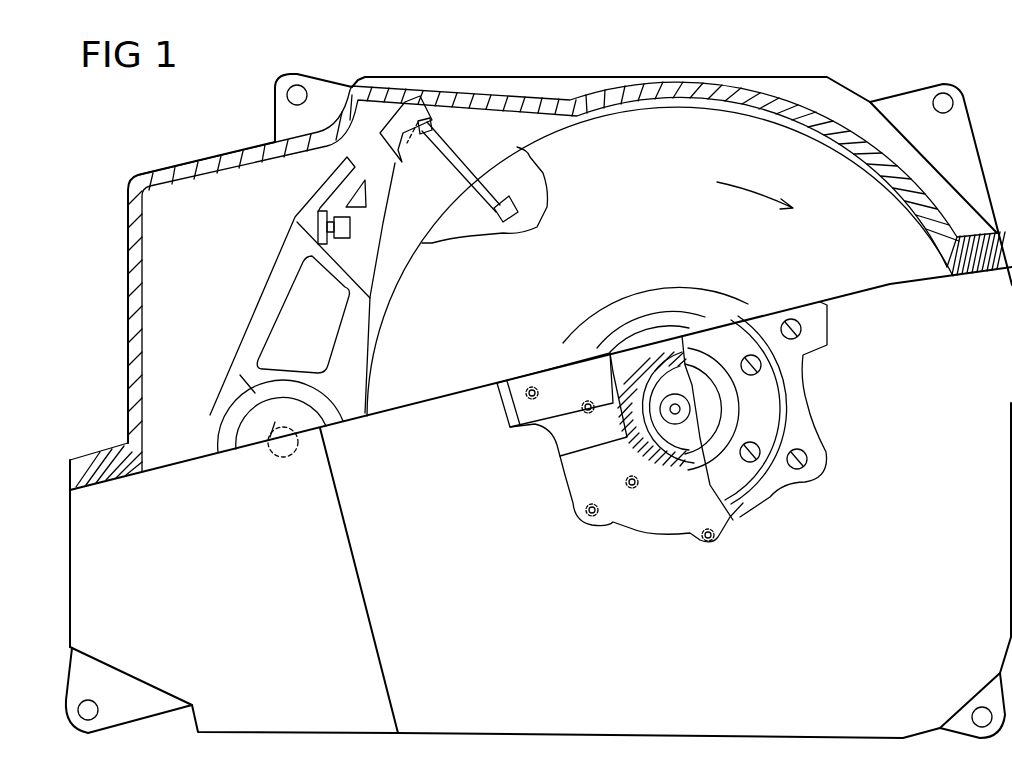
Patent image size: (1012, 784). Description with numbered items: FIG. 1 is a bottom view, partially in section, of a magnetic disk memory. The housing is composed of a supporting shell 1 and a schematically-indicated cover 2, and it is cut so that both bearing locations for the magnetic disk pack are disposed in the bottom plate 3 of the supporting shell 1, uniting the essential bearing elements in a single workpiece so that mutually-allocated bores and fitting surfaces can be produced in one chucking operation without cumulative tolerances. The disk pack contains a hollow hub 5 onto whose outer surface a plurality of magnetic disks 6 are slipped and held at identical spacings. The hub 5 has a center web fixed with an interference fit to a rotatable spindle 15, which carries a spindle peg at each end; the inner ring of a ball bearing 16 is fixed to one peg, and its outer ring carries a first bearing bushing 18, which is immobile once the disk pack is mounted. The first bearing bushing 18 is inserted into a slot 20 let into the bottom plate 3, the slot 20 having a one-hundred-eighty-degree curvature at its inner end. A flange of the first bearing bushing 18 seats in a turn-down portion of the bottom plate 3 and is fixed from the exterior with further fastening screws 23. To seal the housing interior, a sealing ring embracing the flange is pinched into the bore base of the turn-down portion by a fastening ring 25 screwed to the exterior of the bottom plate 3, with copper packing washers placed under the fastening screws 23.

The supporting shell 1 is at (70, 545).
The cover 2 is at (131, 363).
The bottom plate 3 is at (103, 588).
The hub 5 is at (705, 297).
The magnetic disks 6 is at (748, 128).
The spindle 15 is at (653, 428).
The ball bearing 16 is at (578, 474).
The first bearing bushing 18 is at (673, 462).
The slot 20 is at (600, 354).
The fastening screws 23 is at (762, 460).
The fastening ring 25 is at (797, 407).